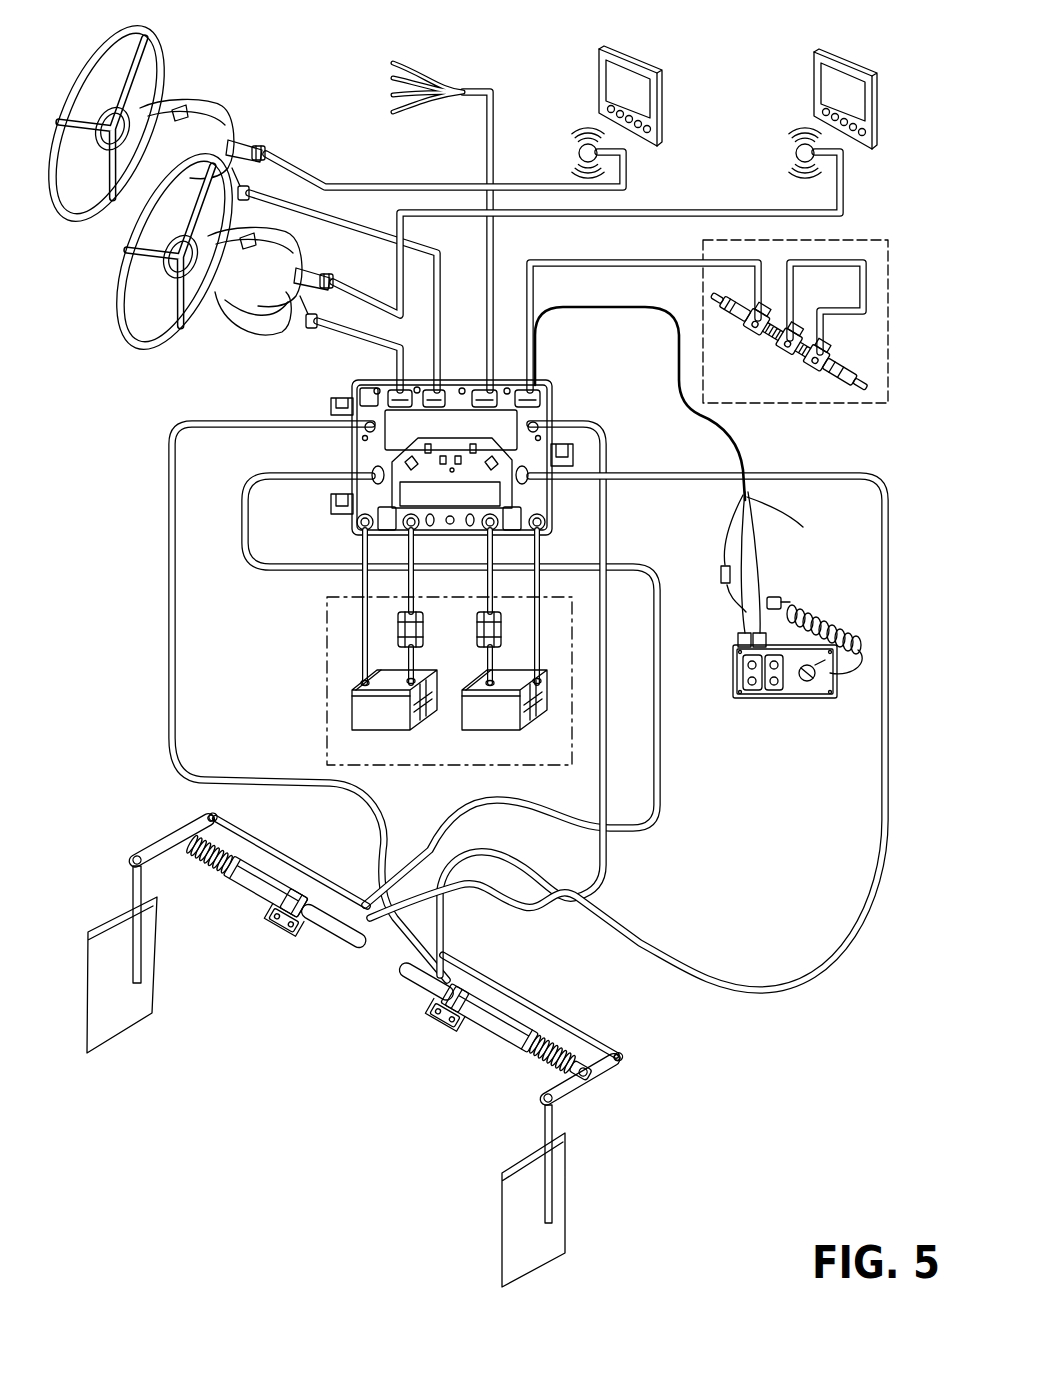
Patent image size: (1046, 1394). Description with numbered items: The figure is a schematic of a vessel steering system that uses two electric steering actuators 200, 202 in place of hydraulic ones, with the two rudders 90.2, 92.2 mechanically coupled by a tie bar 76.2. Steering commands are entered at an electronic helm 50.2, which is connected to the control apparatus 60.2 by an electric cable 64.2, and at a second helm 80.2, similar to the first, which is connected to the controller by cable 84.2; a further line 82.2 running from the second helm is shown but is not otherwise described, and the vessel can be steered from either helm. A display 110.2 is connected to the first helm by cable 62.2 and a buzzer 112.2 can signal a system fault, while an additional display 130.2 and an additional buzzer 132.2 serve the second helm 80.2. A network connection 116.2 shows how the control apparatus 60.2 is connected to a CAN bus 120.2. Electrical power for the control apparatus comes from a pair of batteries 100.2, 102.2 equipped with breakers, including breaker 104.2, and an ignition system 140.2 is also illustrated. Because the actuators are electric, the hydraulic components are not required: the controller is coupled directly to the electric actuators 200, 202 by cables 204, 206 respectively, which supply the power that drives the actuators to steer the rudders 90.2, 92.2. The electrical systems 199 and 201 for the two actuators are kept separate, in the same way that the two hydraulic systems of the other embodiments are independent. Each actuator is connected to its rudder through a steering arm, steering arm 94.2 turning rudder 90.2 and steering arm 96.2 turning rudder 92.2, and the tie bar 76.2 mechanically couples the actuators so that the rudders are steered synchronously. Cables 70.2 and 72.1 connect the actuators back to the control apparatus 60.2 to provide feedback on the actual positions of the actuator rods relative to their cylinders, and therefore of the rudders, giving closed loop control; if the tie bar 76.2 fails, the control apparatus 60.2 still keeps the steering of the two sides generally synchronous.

The electronic helm 50.2 is at (230, 130).
The cable 62.2 is at (303, 173).
The electric cable 64.2 is at (343, 223).
The second helm 80.2 is at (292, 312).
The second helm cable 82.2 is at (380, 308).
The cable 84.2 is at (378, 346).
The control apparatus 60.2 is at (545, 413).
The cable 70.2 is at (177, 668).
The cable 72.1 is at (606, 642).
The display 110.2 is at (640, 82).
The buzzer 112.2 is at (578, 153).
The additional display 130.2 is at (852, 68).
The additional buzzer 132.2 is at (795, 153).
The network connection 116.2 is at (855, 351).
The CAN bus 120.2 is at (780, 369).
The battery 100.2 is at (373, 712).
The battery 102.2 is at (400, 622).
The breaker 104.2 is at (497, 616).
The ignition system 140.2 is at (792, 684).
The tie bar 76.2 is at (290, 862).
The electric actuator 200 is at (262, 884).
The electrical system 199 is at (326, 952).
The steering arm 94.2 is at (157, 851).
The rudder 90.2 is at (107, 1033).
The electric actuator 202 is at (497, 1030).
The electrical system 201 is at (432, 1032).
The steering arm 96.2 is at (575, 1090).
The rudder 92.2 is at (548, 1250).
The cable 204 is at (660, 814).
The cable 206 is at (872, 903).